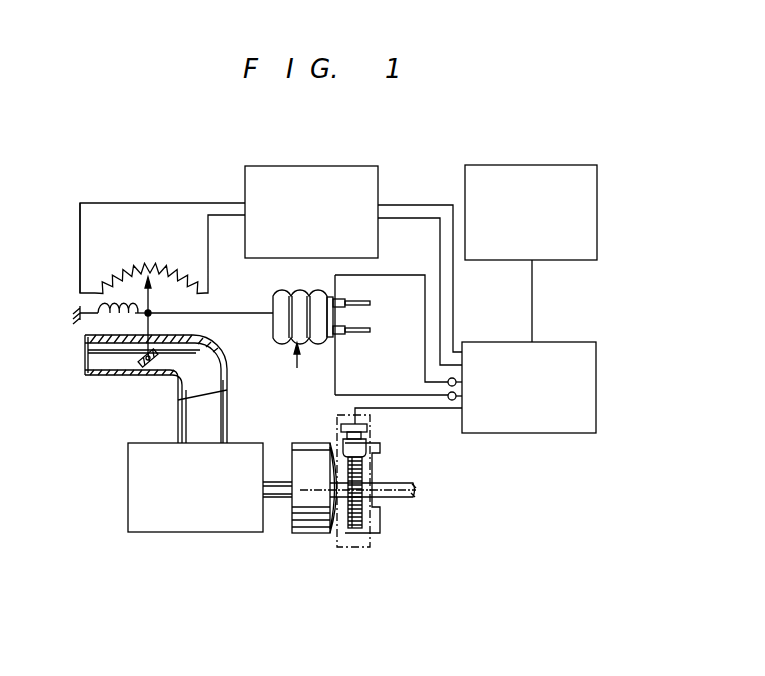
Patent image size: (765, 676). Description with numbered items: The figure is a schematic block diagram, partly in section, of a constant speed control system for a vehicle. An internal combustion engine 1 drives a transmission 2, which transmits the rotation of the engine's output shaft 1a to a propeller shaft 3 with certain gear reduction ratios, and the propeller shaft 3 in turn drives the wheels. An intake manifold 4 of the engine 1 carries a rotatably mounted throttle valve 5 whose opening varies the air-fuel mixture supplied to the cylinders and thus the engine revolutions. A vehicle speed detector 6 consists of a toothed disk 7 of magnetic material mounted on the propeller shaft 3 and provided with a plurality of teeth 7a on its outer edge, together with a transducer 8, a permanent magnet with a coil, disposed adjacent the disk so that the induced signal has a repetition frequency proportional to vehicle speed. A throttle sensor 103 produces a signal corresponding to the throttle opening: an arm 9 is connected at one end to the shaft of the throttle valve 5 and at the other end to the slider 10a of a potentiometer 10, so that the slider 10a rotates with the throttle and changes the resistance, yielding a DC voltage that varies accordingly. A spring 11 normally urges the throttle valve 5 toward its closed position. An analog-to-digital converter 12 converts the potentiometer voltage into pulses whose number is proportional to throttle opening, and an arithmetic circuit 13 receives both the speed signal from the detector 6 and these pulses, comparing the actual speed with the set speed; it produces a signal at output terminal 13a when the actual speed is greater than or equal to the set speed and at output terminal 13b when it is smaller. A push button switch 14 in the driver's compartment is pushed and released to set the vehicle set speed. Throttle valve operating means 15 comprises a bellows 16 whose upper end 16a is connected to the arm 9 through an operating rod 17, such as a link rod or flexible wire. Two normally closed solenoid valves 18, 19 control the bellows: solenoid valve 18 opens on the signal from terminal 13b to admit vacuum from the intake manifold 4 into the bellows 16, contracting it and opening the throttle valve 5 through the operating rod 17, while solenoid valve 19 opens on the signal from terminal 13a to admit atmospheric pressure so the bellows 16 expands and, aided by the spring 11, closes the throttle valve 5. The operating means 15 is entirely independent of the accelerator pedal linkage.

The internal combustion engine 1 is at (175, 538).
The output shaft 1a is at (278, 500).
The transmission 2 is at (316, 535).
The propeller shaft 3 is at (420, 484).
The intake manifold 4 is at (100, 378).
The throttle valve 5 is at (153, 378).
The vehicle speed detector 6 is at (375, 421).
The toothed disk 7 is at (362, 511).
The teeth 7a is at (352, 530).
The transducer 8 is at (343, 448).
The arm 9 is at (150, 312).
The potentiometer 10 is at (162, 248).
The slider 10a is at (171, 248).
The throttle sensor 103 is at (193, 234).
The spring 11 is at (92, 326).
The analog-to-digital converter circuit 12 is at (318, 165).
The arithmetic circuit 13 is at (599, 389).
The output terminal 13a is at (452, 401).
The output terminal 13b is at (448, 383).
The switch 14 is at (538, 165).
The throttle valve operating means 15 is at (309, 370).
The bellows 16 is at (279, 345).
The upper end 16a is at (265, 326).
The operating rod 17 is at (238, 312).
The solenoid valve 18 is at (345, 300).
The solenoid valve 19 is at (360, 340).